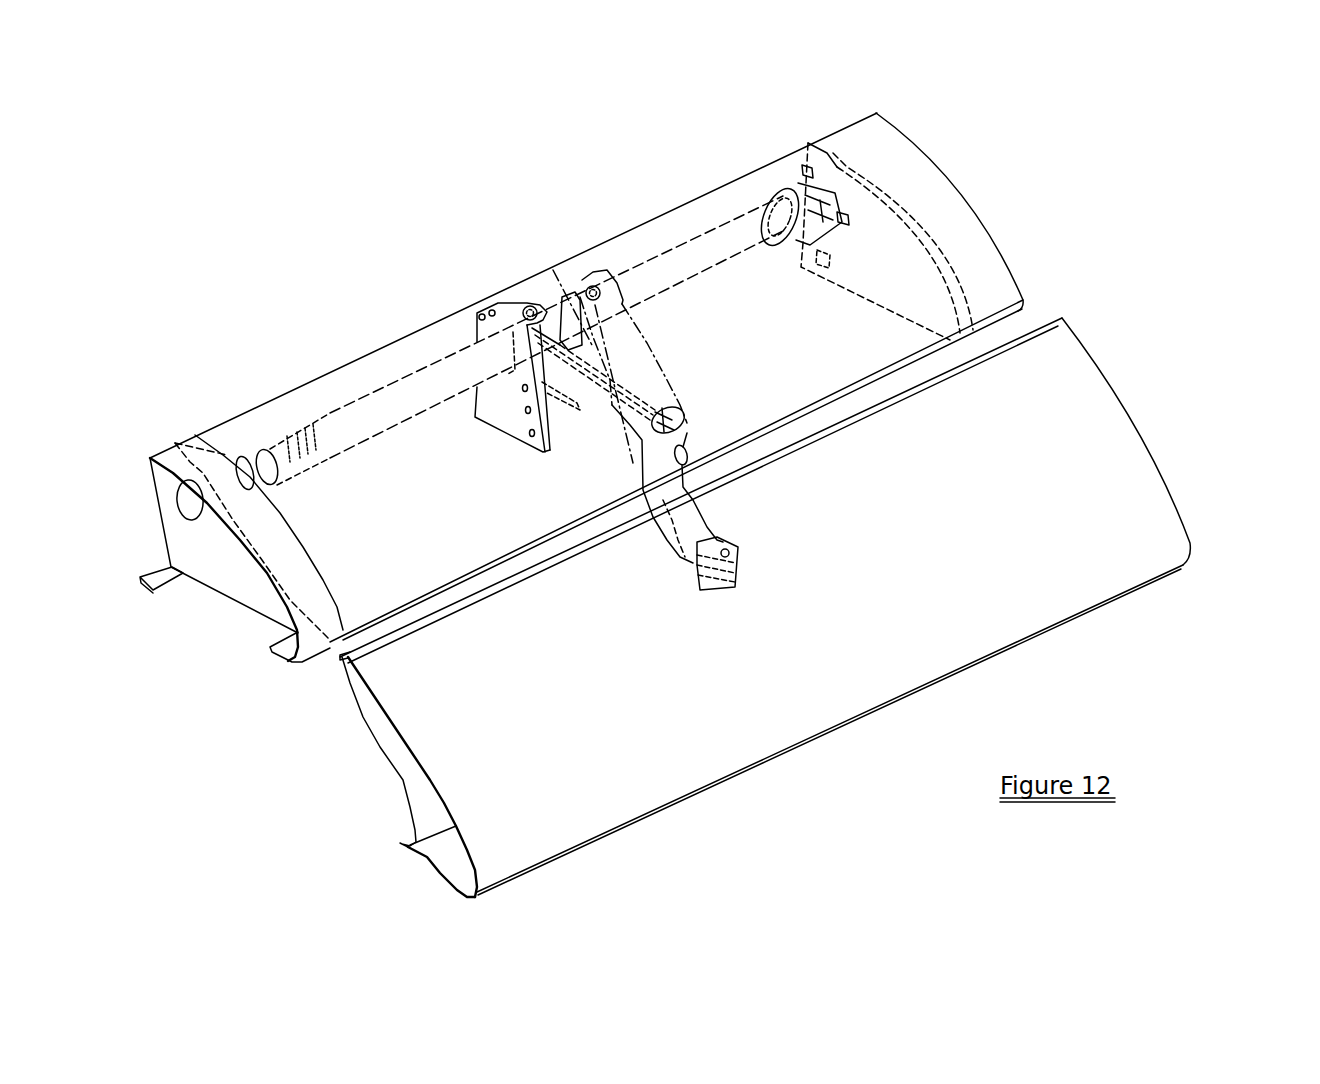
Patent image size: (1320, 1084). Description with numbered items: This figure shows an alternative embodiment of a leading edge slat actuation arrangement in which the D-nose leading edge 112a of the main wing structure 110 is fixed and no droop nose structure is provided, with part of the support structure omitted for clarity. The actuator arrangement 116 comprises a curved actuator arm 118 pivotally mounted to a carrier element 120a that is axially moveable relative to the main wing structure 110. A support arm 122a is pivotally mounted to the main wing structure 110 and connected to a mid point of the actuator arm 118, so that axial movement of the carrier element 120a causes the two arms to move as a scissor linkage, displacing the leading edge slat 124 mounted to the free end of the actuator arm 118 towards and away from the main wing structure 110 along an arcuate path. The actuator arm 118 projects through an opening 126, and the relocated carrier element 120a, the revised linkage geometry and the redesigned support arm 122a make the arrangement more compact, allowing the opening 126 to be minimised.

The main wing structure 110 is at (937, 218).
The D-nose leading edge 112a is at (987, 282).
The actuator arrangement 116 is at (678, 357).
The actuator arm 118 is at (683, 557).
The carrier element 120a is at (391, 400).
The support arm 122a is at (608, 410).
The leading edge slat 124 is at (1098, 567).
The opening 126 is at (680, 456).